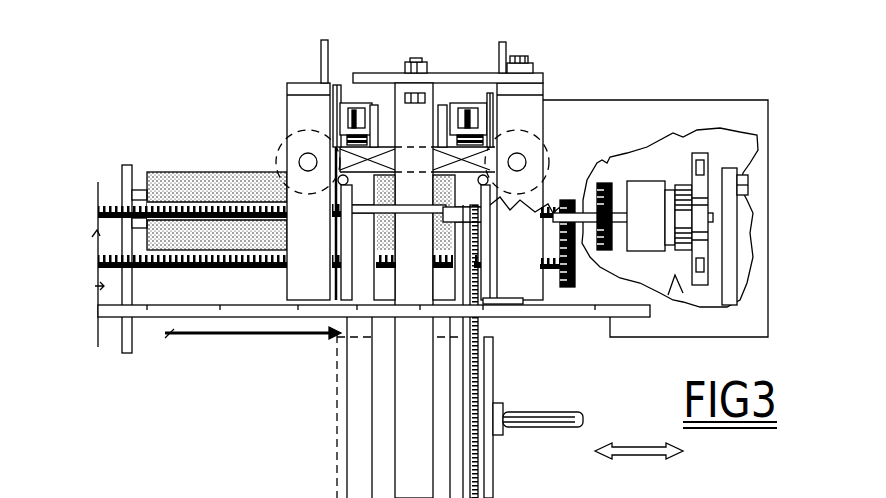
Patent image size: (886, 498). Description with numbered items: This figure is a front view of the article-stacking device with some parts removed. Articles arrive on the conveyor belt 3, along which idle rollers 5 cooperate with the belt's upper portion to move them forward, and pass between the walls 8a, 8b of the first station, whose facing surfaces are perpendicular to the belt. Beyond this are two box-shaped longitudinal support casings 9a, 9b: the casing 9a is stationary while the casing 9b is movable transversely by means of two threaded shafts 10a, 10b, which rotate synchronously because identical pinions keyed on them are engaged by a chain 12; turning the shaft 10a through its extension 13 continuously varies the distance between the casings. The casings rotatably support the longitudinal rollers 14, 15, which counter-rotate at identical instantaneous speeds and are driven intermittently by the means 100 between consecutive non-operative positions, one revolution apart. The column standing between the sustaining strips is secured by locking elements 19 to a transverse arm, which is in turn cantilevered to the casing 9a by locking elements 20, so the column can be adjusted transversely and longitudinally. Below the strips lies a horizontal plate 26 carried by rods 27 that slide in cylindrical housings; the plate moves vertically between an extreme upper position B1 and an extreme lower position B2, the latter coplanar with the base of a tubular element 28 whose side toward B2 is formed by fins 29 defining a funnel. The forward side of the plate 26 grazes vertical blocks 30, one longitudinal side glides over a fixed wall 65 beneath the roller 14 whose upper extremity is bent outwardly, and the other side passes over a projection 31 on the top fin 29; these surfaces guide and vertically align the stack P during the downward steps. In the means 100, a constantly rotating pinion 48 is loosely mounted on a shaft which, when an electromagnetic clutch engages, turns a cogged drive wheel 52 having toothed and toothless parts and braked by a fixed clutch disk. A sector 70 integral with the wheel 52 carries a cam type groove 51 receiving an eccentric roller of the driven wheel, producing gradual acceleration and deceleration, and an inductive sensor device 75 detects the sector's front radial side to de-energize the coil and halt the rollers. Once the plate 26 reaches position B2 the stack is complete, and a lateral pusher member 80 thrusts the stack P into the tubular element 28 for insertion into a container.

The conveyor belt 3 is at (208, 163).
The idle rollers 5 is at (355, 120).
The wall 8a is at (487, 100).
The wall 8b is at (333, 97).
The support casing 9a is at (522, 115).
The support casing 9b is at (297, 117).
The threaded shaft 10a is at (108, 205).
The threaded shaft 10b is at (167, 255).
The chain 12 is at (573, 240).
The extension 13 is at (645, 213).
The longitudinal roller 14 is at (583, 195).
The longitudinal roller 15 is at (260, 145).
The locking elements 19 is at (415, 62).
The locking elements 20 is at (518, 56).
The horizontal plate 26 is at (380, 227).
The rods 27 is at (470, 350).
The tubular element 28 is at (245, 398).
The fins 29 is at (300, 497).
The vertical blocks 30 is at (457, 373).
The projection 31 is at (333, 327).
The pinion 48 is at (618, 183).
The cam type groove 51 is at (700, 157).
The cogged drive wheel 52 is at (700, 250).
The fixed wall 65 is at (492, 290).
The sector 70 is at (700, 232).
The inductive sensor device 75 is at (743, 173).
The lateral pusher member 80 is at (487, 382).
The drive means 100 is at (710, 342).
The extreme upper position B1 is at (562, 38).
The extreme lower position B2 is at (322, 488).
The stack P is at (324, 373).